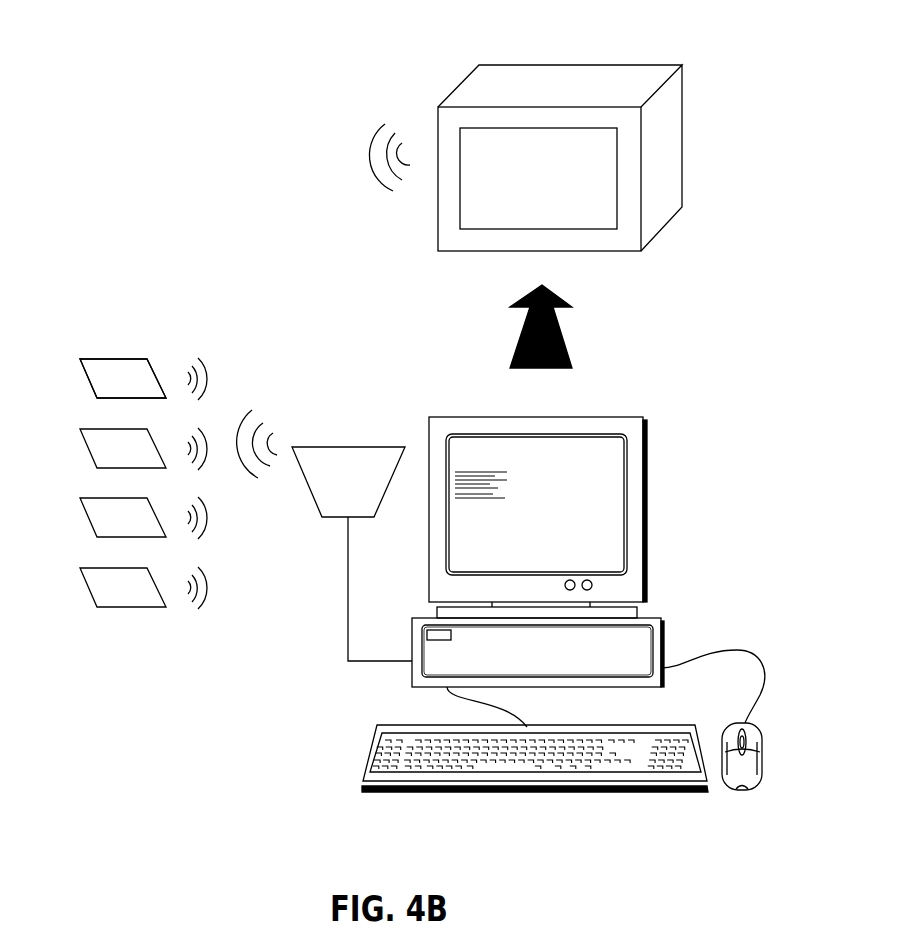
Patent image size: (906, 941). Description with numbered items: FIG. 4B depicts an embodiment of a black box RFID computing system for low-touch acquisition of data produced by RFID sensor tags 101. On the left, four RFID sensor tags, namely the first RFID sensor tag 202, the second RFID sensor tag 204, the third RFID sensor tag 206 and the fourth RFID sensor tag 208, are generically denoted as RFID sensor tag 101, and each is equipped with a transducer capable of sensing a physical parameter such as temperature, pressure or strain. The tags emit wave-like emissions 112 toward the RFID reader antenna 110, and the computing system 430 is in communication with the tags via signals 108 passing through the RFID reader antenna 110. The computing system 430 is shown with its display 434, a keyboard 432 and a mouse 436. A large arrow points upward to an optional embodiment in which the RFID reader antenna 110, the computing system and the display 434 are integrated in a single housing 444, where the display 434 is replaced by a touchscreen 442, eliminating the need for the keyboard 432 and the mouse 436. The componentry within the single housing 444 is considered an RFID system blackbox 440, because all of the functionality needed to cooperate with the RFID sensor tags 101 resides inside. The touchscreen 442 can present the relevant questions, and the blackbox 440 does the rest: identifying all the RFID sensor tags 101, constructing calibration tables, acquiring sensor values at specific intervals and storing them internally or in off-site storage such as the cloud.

The RFID sensor tag 101 is at (118, 348).
The signals 108 is at (362, 157).
The RFID reader antenna 110 is at (338, 447).
The RFID tag signal 112 is at (212, 388).
The RFID sensor tag #1 202 is at (93, 384).
The RFID sensor tag #2 204 is at (93, 454).
The RFID sensor tag #3 206 is at (93, 523).
The RFID sensor tag #4 208 is at (93, 593).
The computing system 430 is at (663, 638).
The keyboard 432 is at (366, 768).
The display 434 is at (566, 417).
The mouse 436 is at (722, 740).
The RFID system blackbox 440 is at (532, 89).
The touchscreen 442 is at (502, 128).
The single housing 444 is at (541, 63).